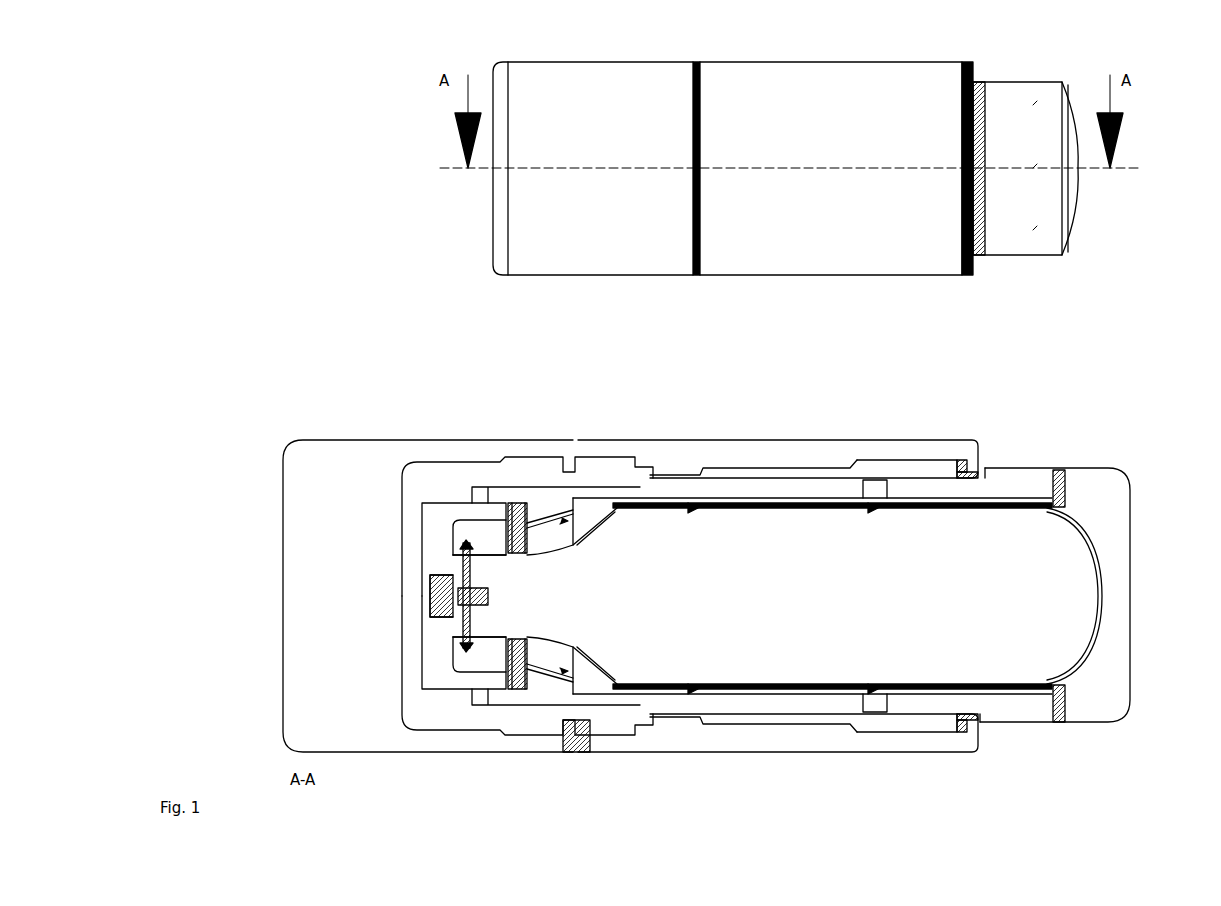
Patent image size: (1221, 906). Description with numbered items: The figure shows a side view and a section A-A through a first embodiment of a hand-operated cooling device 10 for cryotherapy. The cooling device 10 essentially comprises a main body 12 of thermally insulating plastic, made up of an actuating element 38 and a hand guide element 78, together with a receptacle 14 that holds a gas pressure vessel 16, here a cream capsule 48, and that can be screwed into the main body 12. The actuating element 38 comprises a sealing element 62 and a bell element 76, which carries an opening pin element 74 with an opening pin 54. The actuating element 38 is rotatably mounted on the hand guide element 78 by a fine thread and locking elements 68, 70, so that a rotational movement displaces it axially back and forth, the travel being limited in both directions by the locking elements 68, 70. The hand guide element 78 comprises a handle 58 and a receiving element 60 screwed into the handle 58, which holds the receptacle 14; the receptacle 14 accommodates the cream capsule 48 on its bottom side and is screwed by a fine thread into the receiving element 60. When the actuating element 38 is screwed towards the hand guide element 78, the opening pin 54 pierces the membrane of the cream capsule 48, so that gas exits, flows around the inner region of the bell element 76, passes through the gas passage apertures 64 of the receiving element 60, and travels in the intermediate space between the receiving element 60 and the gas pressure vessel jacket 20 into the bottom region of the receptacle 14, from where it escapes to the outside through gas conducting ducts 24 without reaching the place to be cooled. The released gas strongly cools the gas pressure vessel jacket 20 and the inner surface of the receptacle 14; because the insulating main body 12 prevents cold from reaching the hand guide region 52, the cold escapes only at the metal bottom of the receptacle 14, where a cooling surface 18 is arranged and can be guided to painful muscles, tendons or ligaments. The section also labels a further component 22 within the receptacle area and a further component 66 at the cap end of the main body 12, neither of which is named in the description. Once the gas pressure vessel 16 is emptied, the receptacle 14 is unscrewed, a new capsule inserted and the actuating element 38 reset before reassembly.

The cooling device 10 is at (479, 61).
The main body 12 is at (724, 257).
The receptacle 14 is at (1013, 245).
The gas pressure vessel 16 is at (735, 670).
The cooling surface 18 is at (1078, 183).
The gas pressure vessel jacket 20 is at (945, 688).
The reservoir sleeve wall 22 is at (825, 503).
The gas conducting ducts 24 is at (1023, 228).
The actuating element 38 is at (607, 215).
The cream capsule 48 is at (596, 596).
The hand guide region 52 is at (680, 444).
The opening pin 54 is at (468, 668).
The handle 58 is at (797, 740).
The receiving element 60 is at (740, 487).
The sealing element 62 is at (428, 482).
The gas passage apertures 64 is at (517, 523).
The housing end part 66 is at (312, 466).
The locking element 68 is at (627, 722).
The locking element 70 is at (582, 738).
The opening pin element 74 is at (443, 598).
The bell element 76 is at (440, 518).
The hand guide element 78 is at (838, 225).